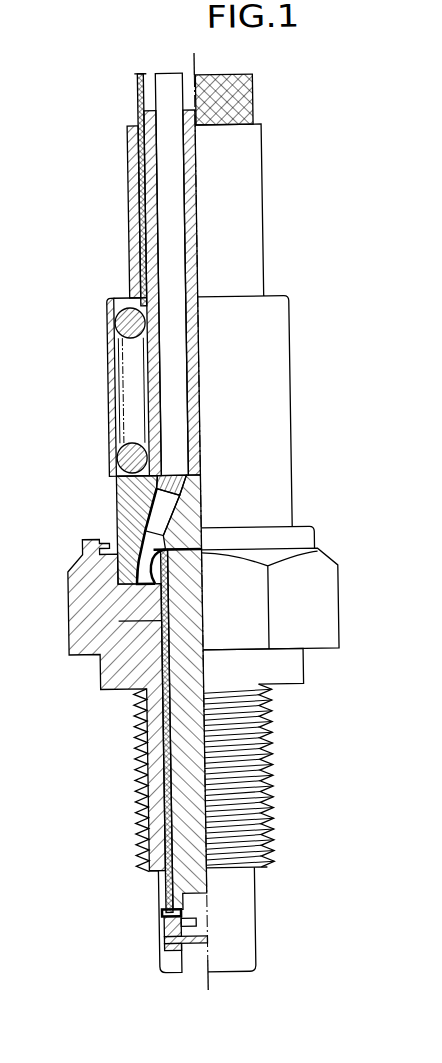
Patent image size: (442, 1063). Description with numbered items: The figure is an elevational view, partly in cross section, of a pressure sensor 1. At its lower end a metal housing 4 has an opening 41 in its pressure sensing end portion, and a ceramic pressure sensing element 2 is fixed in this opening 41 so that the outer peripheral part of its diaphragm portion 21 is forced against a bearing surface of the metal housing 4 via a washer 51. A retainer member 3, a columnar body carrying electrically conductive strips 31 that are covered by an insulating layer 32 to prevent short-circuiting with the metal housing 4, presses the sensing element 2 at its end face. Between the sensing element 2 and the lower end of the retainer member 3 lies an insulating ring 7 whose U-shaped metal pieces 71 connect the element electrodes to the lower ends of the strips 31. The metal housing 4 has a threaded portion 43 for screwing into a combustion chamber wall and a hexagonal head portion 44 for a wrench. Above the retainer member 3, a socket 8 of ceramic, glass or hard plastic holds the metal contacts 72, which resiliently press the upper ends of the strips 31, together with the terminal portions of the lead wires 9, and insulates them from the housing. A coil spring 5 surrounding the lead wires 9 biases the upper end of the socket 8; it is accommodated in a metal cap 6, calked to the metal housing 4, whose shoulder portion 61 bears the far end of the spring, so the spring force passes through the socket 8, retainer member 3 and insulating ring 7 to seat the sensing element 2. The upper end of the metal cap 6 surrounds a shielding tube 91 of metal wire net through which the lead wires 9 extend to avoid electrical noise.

The pressure sensor 1 is at (318, 477).
The ceramic pressure sensing element 2 is at (147, 928).
The diaphragm portion 21 is at (184, 942).
The retainer member 3 is at (147, 753).
The electrically conductive strips 31 is at (152, 790).
The insulating layer 32 is at (152, 710).
The metal housing 4 is at (72, 612).
The opening 41 is at (181, 968).
The threaded portion 43 is at (259, 752).
The head portion 44 is at (319, 605).
The coil spring 5 is at (117, 446).
The washer 51 is at (149, 947).
The metal cap 6 is at (275, 374).
The shoulder portion 61 is at (111, 320).
The insulating ring 7 is at (145, 910).
The U-shaped metal pieces 71 is at (183, 913).
The metal contacts 72 is at (136, 518).
The socket 8 is at (120, 500).
The lead wires 9 is at (167, 230).
The shielding tube 91 is at (252, 97).